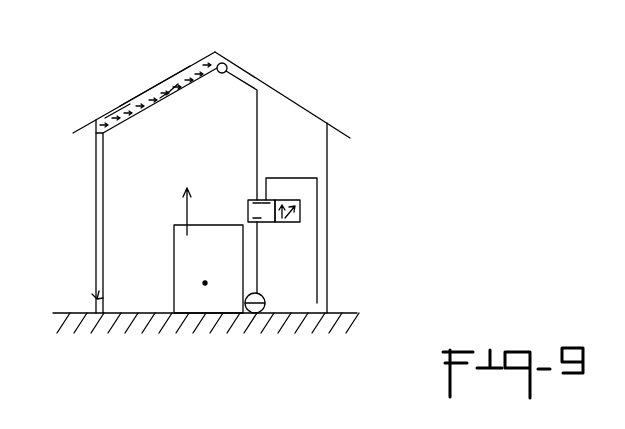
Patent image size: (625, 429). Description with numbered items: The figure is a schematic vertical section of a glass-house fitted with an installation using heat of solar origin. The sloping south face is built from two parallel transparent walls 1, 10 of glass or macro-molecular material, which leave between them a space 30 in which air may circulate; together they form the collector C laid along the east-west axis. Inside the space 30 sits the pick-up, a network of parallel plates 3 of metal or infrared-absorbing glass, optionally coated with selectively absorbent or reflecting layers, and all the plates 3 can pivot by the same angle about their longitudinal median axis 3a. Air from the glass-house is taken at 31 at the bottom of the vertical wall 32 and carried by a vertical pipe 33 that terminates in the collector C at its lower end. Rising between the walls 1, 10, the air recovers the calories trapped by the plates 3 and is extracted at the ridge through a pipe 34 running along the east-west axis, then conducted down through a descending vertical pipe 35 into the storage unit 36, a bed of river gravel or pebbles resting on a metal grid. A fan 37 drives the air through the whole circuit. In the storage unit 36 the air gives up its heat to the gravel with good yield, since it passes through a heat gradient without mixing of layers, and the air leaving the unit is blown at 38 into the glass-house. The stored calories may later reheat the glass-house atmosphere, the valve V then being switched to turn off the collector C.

The space 30 is at (105, 117).
The collector C is at (140, 93).
The transparent wall 1 is at (165, 80).
The parallel plates 3 is at (197, 64).
The longitudinal median axis 3a is at (179, 88).
The transparent wall 10 is at (155, 105).
The pipe 34 is at (228, 66).
The descending vertical pipe 35 is at (258, 148).
The vertical wall 32 is at (96, 228).
The vertical pipe 33 is at (104, 193).
The air intake 31 is at (99, 291).
The storage unit 36 is at (208, 269).
The air outlet 38 is at (190, 208).
The fan 37 is at (262, 295).
The valve V is at (290, 222).